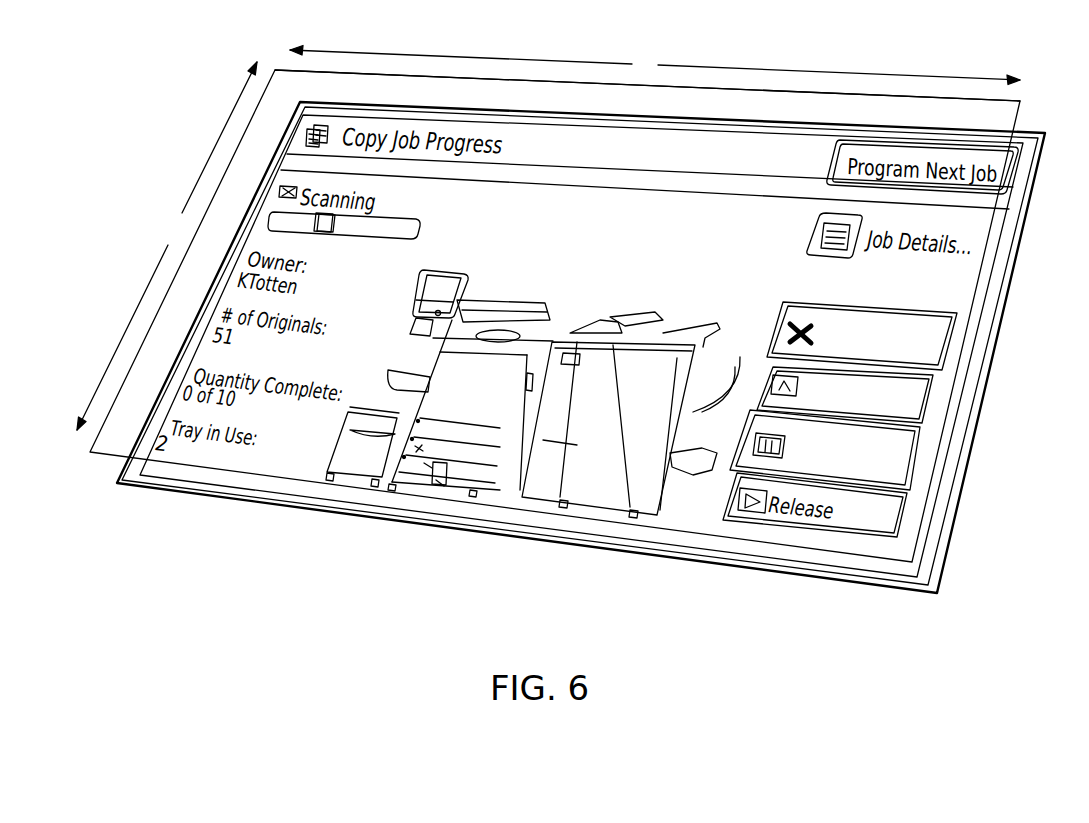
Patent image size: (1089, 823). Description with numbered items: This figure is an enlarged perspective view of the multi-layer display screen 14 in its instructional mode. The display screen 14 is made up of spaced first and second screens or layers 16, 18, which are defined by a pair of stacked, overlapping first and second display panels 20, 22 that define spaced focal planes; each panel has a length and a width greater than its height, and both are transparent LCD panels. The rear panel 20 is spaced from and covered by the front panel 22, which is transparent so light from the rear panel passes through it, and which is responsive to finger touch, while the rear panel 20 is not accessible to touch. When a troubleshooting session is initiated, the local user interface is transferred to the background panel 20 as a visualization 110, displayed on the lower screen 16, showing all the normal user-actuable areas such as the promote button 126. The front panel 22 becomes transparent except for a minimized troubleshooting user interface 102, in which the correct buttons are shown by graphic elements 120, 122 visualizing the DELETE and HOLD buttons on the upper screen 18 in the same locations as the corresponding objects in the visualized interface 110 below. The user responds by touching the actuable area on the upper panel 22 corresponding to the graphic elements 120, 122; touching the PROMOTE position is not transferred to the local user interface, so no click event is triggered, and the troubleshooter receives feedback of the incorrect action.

The multi-layer display screen 14 is at (145, 233).
The first screen or layer 16 is at (1034, 132).
The second screen or layer 18 is at (870, 108).
The first display panel 20 is at (172, 485).
The second display panel 22 is at (290, 86).
The troubleshooting user interface 102 is at (762, 318).
The visualization of the local user interface 110 is at (457, 488).
The graphic element 120 is at (917, 335).
The graphic element 122 is at (887, 453).
The promote button 126 is at (913, 393).